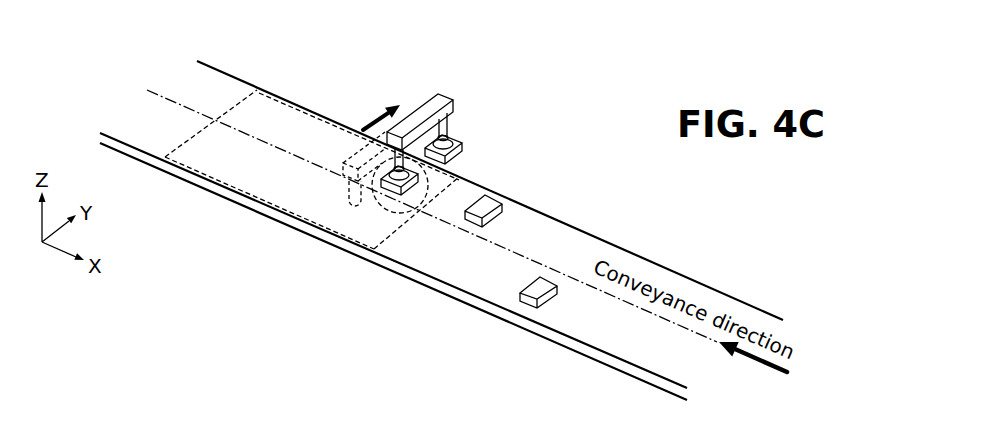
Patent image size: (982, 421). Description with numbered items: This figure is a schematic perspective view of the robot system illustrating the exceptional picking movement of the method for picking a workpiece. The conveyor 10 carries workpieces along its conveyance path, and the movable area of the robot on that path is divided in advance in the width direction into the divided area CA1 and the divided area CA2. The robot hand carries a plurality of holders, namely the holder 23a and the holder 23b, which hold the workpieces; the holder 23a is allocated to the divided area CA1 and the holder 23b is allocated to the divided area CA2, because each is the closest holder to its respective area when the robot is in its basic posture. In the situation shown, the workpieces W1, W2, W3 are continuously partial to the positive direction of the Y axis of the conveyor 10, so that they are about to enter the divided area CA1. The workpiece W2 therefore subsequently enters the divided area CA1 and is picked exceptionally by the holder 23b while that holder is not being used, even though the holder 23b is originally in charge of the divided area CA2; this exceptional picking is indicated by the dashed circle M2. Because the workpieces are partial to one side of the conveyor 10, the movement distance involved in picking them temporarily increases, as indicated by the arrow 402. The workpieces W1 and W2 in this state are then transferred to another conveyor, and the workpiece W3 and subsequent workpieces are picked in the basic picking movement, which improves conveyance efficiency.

The conveyor 10 is at (246, 66).
The divided area CA1 is at (279, 113).
The divided area CA2 is at (212, 151).
The arrow 402 is at (370, 123).
The holder 23a is at (448, 122).
The holder 23b is at (386, 178).
The workpiece W1 is at (454, 144).
The workpiece W2 is at (418, 174).
The workpiece W3 is at (487, 200).
The dashed circle M2 is at (402, 213).